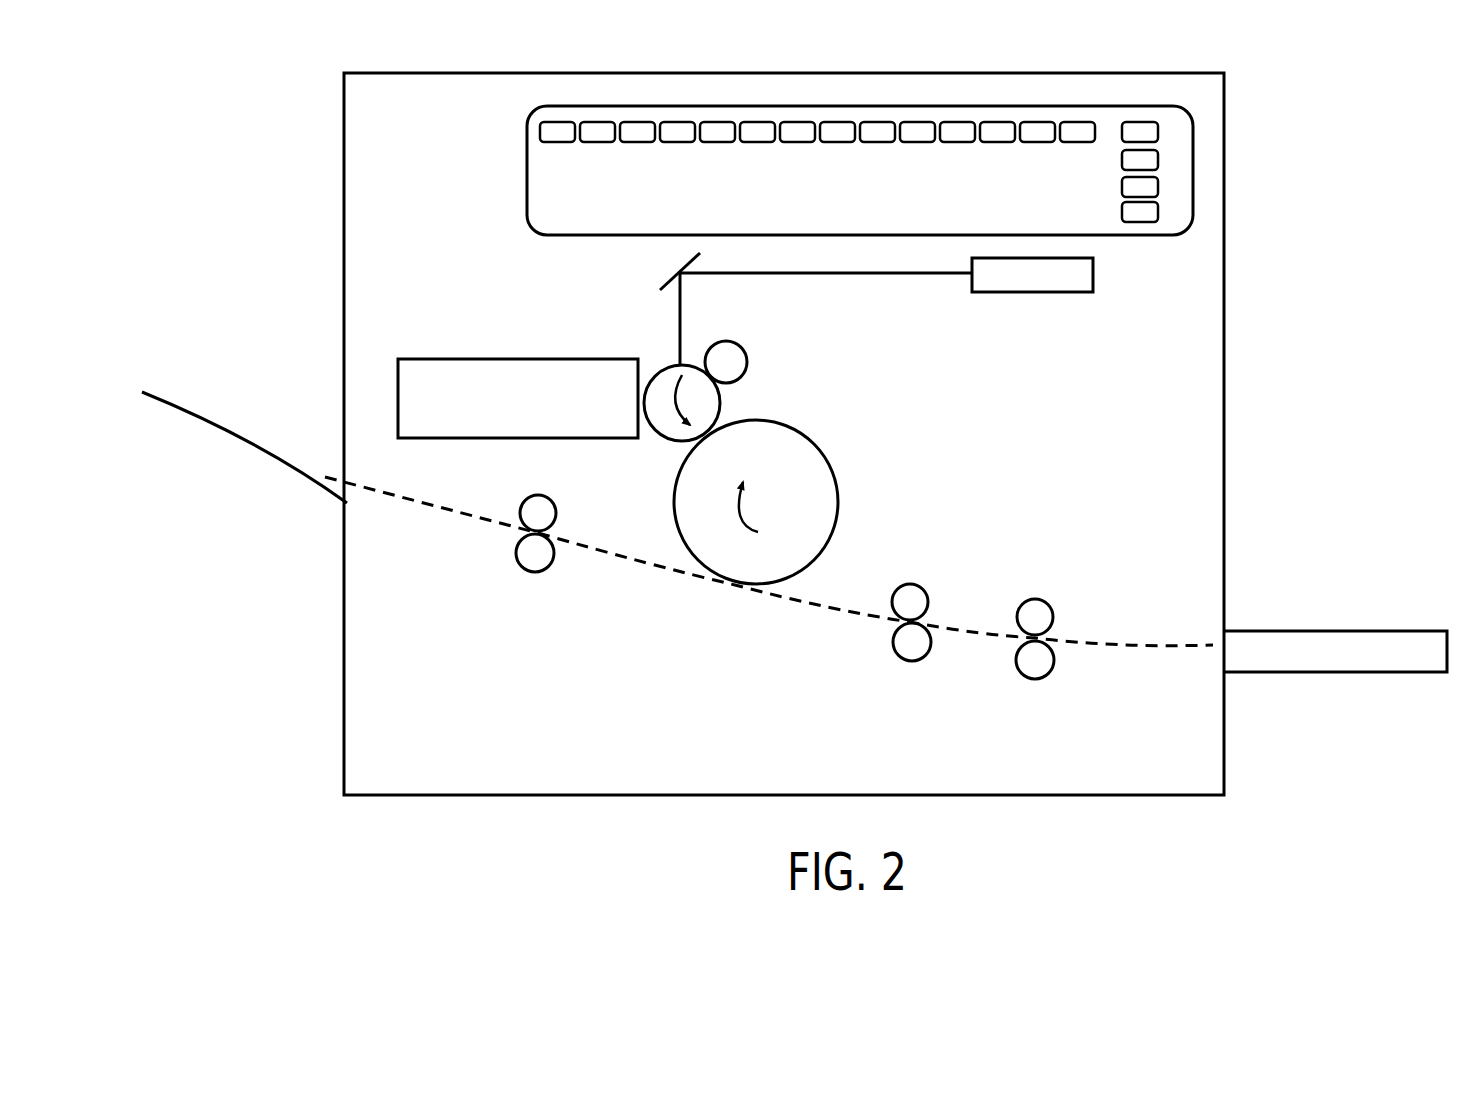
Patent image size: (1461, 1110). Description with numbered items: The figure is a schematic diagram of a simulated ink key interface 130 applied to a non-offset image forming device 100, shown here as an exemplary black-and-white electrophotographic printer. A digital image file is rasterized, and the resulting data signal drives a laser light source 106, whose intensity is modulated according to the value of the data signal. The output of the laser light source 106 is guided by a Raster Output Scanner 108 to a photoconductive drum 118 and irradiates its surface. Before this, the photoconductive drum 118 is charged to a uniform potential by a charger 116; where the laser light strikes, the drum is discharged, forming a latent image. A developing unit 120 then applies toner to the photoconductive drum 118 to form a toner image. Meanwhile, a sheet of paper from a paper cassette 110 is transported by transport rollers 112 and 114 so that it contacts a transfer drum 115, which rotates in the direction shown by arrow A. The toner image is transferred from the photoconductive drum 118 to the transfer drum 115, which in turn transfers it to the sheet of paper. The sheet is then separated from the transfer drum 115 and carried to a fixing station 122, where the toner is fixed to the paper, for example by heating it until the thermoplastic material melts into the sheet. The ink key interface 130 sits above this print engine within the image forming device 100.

The non-offset image forming device 100 is at (306, 731).
The laser light source 106 is at (1093, 275).
The Raster Output Scanner 108 is at (665, 285).
The paper cassette 110 is at (1253, 630).
The transport roller 112 is at (1035, 598).
The transport roller 114 is at (910, 583).
The transfer drum 115 is at (830, 463).
The charger 116 is at (740, 346).
The photoconductive drum 118 is at (663, 372).
The developing unit 120 is at (500, 358).
The fixing station 122 is at (540, 572).
The ink key interface 130 is at (1043, 107).